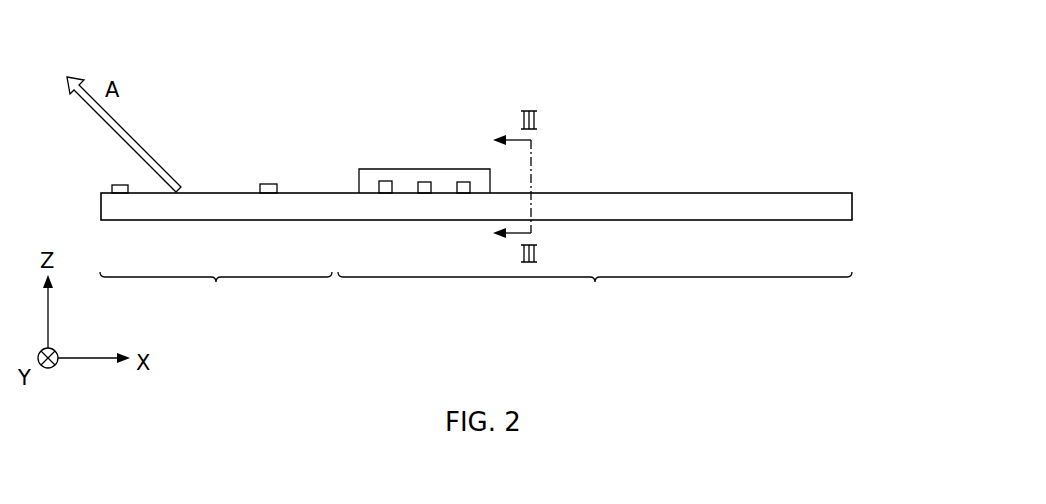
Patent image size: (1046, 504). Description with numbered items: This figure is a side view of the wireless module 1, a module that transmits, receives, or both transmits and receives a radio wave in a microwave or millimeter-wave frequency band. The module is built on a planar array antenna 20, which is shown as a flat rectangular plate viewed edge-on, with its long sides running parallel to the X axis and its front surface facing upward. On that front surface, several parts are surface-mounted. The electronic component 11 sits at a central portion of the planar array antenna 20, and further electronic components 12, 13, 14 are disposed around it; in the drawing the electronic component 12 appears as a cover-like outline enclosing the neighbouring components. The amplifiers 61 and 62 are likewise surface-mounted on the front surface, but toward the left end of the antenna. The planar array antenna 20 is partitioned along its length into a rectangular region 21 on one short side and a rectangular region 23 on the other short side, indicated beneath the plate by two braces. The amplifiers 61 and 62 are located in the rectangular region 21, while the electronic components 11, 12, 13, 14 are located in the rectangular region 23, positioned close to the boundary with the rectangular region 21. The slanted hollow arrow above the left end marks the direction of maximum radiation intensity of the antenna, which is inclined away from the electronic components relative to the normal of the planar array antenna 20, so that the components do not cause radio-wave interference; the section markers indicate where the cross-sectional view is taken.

The wireless module 1 is at (803, 100).
The planar array antenna 20 is at (737, 205).
The amplifier 62 is at (107, 190).
The amplifier 61 is at (268, 184).
The electronic component 12 is at (378, 187).
The electronic component 11 is at (383, 170).
The electronic component 13 is at (425, 182).
The electronic component 14 is at (465, 182).
The rectangular region 21 is at (216, 293).
The rectangular region 23 is at (595, 293).